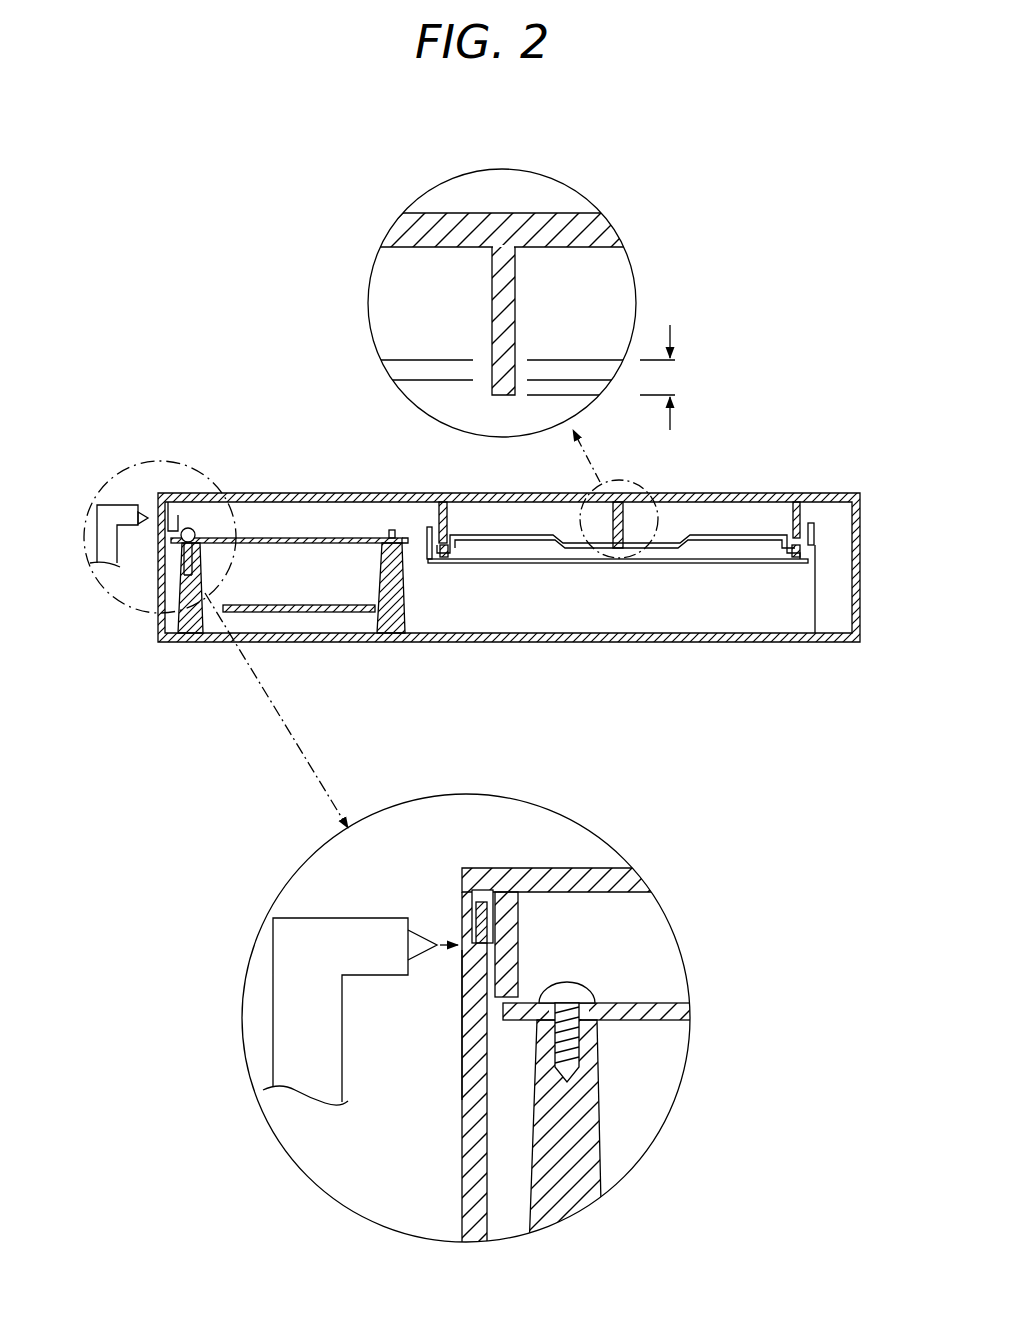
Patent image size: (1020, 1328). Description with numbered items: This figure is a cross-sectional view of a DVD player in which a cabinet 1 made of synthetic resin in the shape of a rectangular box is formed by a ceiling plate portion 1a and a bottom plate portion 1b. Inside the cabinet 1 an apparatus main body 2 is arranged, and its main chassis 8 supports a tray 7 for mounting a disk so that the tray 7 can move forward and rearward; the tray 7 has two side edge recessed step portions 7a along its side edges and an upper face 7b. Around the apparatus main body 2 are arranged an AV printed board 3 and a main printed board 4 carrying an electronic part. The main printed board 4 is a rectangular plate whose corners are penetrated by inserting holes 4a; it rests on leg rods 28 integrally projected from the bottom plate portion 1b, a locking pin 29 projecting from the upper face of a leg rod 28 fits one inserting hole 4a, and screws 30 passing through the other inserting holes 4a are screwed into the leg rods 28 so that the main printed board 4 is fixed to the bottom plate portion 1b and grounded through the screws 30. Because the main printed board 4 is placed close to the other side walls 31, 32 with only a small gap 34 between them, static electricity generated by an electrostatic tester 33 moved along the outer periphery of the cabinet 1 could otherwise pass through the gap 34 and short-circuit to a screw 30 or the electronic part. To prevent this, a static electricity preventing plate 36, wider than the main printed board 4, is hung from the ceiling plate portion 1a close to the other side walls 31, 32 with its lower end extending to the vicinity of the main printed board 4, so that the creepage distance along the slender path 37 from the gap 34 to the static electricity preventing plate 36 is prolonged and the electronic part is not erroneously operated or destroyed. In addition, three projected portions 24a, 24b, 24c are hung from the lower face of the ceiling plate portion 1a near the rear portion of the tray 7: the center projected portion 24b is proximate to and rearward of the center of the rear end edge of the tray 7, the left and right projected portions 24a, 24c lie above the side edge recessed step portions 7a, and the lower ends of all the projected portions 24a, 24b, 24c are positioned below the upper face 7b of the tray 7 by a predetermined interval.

The cabinet 1 is at (345, 485).
The ceiling plate portion 1a is at (300, 493).
The bottom plate portion 1b is at (572, 644).
The apparatus main body 2 is at (826, 522).
The AV printed board 3 is at (277, 605).
The main printed board 4 is at (318, 537).
The inserting hole 4a is at (586, 990).
The tray 7 is at (540, 523).
The side edge recessed step portion 7a is at (423, 562).
The upper face of the tray 7b is at (732, 532).
The main chassis 8 is at (822, 600).
The projected portion 24a is at (444, 500).
The projected portion 24b is at (618, 505).
The projected portion 24c is at (797, 500).
The leg rod 28 is at (193, 622).
The locking pin 29 is at (392, 530).
The screw 30 is at (185, 530).
The other side wall 31 is at (160, 505).
The other side wall 32 is at (160, 612).
The electrostatic tester 33 is at (108, 563).
The gap 34 is at (460, 928).
The static electricity preventing plate 36 is at (180, 512).
The slender path 37 is at (490, 960).